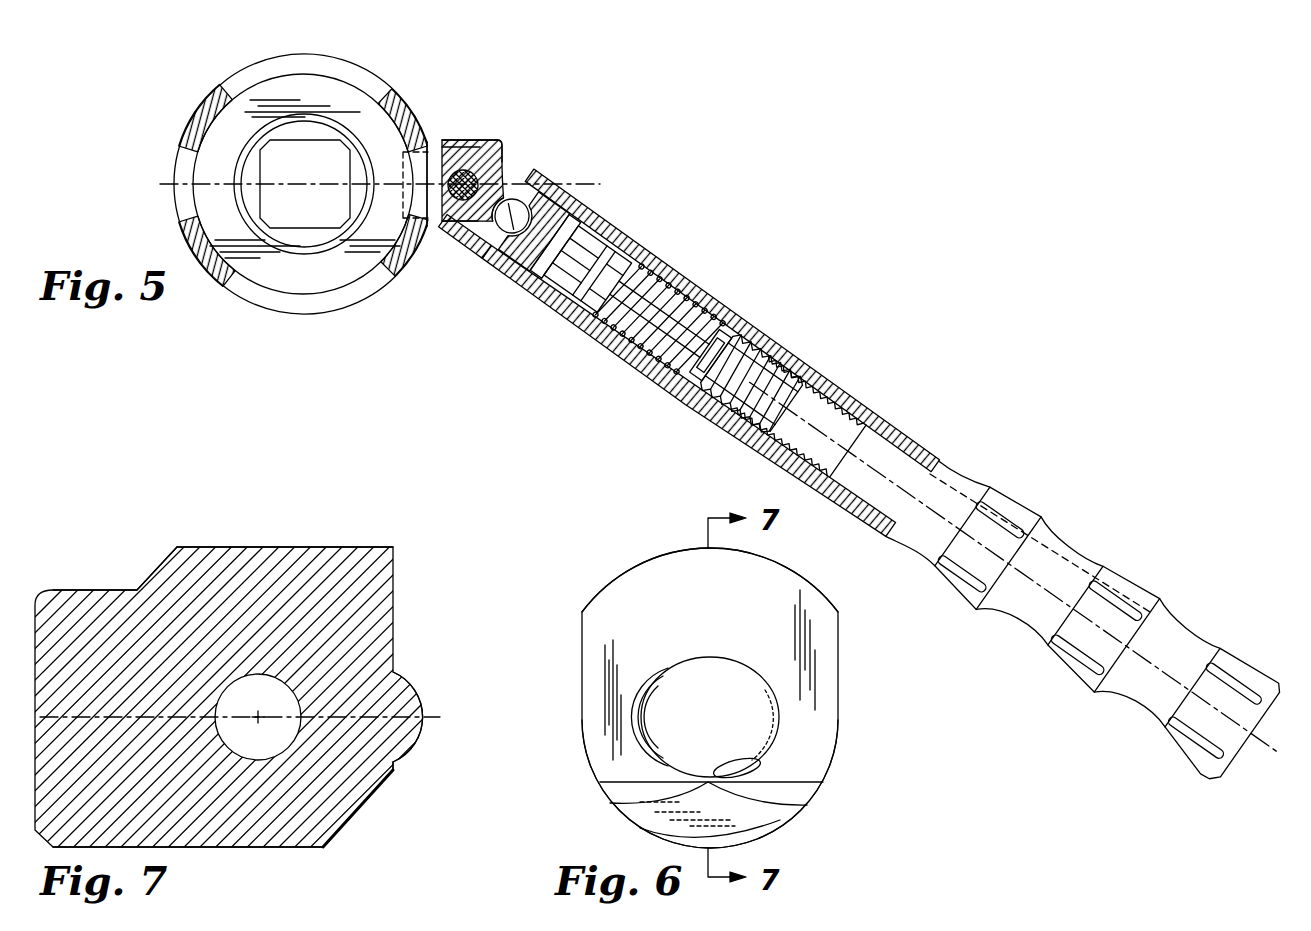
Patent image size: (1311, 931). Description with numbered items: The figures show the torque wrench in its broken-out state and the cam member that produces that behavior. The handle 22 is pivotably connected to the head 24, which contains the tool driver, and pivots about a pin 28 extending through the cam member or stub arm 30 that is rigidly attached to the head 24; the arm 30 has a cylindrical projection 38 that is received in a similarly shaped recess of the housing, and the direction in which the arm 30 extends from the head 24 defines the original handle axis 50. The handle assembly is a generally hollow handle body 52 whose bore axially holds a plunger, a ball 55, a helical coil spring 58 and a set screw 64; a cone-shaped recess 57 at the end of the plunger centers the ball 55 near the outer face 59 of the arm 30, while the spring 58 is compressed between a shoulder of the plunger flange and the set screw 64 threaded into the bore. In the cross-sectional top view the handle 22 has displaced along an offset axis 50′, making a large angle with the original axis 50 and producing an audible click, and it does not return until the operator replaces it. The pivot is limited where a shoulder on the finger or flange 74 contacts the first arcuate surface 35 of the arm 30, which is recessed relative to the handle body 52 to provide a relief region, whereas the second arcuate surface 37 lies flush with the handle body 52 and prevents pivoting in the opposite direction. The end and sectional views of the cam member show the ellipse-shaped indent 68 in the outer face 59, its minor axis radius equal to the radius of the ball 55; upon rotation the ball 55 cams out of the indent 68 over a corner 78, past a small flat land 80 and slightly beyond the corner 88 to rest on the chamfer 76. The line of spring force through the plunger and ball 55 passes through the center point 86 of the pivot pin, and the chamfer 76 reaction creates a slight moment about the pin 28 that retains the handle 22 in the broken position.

In FIG. 5, the handle 22 is at (777, 230).
In FIG. 5, the head 24 is at (178, 128).
In FIG. 5, the pin 28 is at (480, 139).
In FIG. 5, the cam member or stub arm 30 is at (445, 130).
In FIG. 6, the cam member or stub arm 30 is at (603, 560).
In FIG. 7, the cam member or stub arm 30 is at (362, 527).
In FIG. 5, the first arcuate surface 35 is at (430, 228).
In FIG. 6, the first arcuate surface 35 is at (640, 828).
In FIG. 7, the first arcuate surface 35 is at (250, 850).
In FIG. 5, the second arcuate surface 37 is at (497, 139).
In FIG. 6, the second arcuate surface 37 is at (668, 552).
In FIG. 7, the cylindrical projection 38 is at (90, 588).
In FIG. 5, the original handle axis 50 is at (160, 182).
In FIG. 7, the original handle axis 50 is at (440, 716).
In FIG. 5, the offset axis 50′ is at (1040, 568).
In FIG. 5, the handle body 52 is at (918, 432).
In FIG. 5, the ball 55 is at (518, 256).
In FIG. 5, the cone-shaped recess 57 is at (548, 197).
In FIG. 5, the spring 58 is at (655, 325).
In FIG. 5, the outer face 59 is at (503, 160).
In FIG. 7, the outer face 59 is at (395, 600).
In FIG. 5, the set screw 64 is at (775, 358).
In FIG. 5, the indent 68 is at (508, 196).
In FIG. 6, the indent 68 is at (740, 693).
In FIG. 7, the indent 68 is at (378, 692).
In FIG. 5, the finger or flange 74 is at (455, 242).
In FIG. 6, the chamfer 76 is at (760, 820).
In FIG. 7, the chamfer 76 is at (342, 832).
In FIG. 6, the corner 78 is at (745, 760).
In FIG. 7, the corner 78 is at (395, 768).
In FIG. 6, the land 80 is at (610, 796).
In FIG. 7, the land 80 is at (395, 773).
In FIG. 7, the center point of the pivot pin 86 is at (255, 714).
In FIG. 6, the corner 88 is at (800, 803).
In FIG. 7, the corner 88 is at (386, 790).